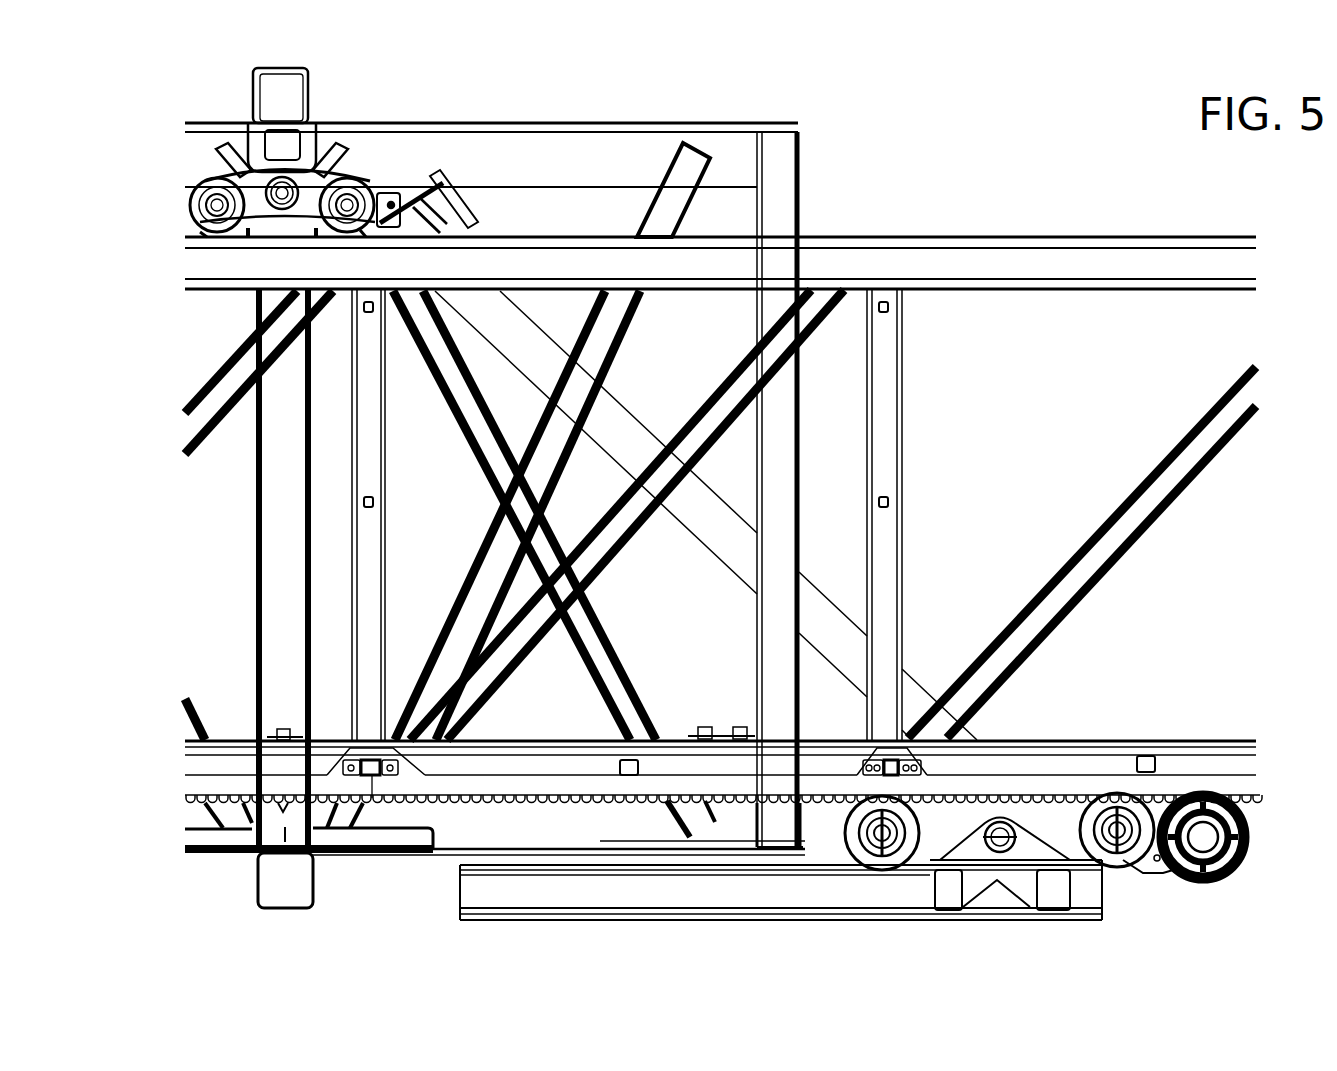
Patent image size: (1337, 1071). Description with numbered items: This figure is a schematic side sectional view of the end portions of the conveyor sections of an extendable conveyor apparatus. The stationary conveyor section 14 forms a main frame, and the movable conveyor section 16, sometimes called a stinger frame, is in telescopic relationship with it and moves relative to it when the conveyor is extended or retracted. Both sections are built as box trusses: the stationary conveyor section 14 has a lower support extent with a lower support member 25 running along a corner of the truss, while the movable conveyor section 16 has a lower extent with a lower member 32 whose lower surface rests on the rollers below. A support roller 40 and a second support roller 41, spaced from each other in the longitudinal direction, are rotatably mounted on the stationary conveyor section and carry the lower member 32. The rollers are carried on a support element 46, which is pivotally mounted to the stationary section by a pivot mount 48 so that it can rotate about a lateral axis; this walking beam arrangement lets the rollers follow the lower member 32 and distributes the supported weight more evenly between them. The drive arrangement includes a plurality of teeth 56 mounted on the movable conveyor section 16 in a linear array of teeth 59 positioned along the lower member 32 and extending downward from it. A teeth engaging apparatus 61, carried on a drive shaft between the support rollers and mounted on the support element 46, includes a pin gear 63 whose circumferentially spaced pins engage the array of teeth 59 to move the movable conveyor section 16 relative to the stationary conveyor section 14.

The stationary conveyor section 14 is at (818, 149).
The movable conveyor section 16 is at (914, 224).
The lower member 32 is at (1096, 764).
The lower support member 25 is at (375, 868).
The array of teeth 59 is at (551, 828).
The teeth 56 is at (627, 806).
The support roller 41 is at (876, 864).
The support element 46 is at (938, 842).
The pivot mount 48 is at (1005, 853).
The support roller 40 is at (1128, 874).
The pin gear 63 is at (1224, 882).
The teeth engaging apparatus 61 is at (1209, 879).